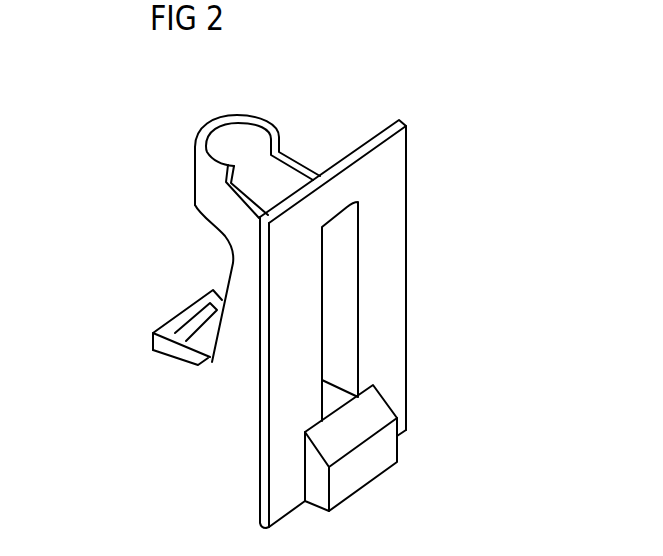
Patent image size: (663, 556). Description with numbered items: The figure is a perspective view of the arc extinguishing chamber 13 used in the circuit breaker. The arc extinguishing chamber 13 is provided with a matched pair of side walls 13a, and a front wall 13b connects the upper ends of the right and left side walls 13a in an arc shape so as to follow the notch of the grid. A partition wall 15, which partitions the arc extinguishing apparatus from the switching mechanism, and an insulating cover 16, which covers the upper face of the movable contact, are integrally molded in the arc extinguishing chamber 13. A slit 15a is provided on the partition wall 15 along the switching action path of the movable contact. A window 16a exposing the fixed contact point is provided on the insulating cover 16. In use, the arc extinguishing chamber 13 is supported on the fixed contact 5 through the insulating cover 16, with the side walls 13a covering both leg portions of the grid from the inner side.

The fixed contact 5 is at (307, 265).
The arc extinguishing chamber 13 is at (445, 158).
The side wall 13a is at (243, 262).
The front wall 13b is at (223, 193).
The partition wall 15 is at (380, 242).
The slit 15a is at (338, 351).
The insulating cover 16 is at (343, 433).
The window 16a is at (180, 390).